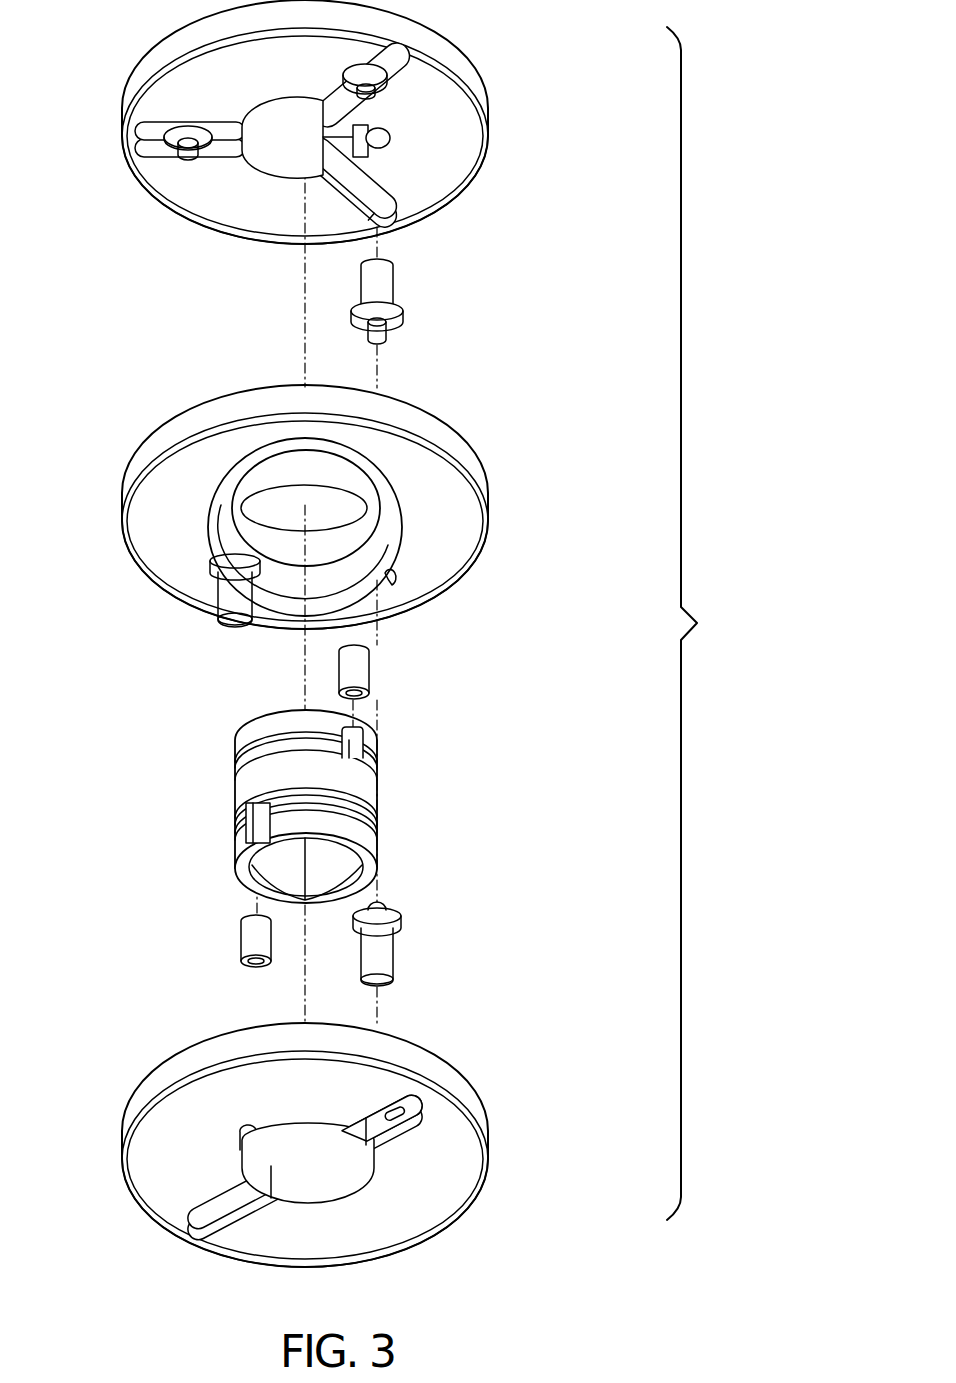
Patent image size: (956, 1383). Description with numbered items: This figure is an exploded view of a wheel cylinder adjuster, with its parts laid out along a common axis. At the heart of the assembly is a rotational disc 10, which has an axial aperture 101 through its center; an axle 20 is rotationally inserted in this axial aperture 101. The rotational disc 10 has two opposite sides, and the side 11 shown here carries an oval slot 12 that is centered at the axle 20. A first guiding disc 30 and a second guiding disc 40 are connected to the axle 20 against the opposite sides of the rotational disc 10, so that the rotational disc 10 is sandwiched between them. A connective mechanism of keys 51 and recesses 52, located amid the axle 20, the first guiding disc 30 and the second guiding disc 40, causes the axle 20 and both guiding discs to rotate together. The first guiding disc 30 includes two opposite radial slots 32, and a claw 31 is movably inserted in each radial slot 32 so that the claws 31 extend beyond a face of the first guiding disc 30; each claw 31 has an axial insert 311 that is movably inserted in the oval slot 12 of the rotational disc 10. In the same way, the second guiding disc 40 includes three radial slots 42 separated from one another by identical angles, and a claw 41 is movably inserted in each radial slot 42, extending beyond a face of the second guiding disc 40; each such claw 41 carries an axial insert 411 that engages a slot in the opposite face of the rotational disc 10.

The rotational disc 10 is at (214, 416).
The side 11 is at (158, 551).
The axial aperture 101 is at (358, 508).
The oval slot 12 is at (390, 578).
The axle 20 is at (258, 780).
The guiding disc 30 is at (178, 1073).
The claw 31 is at (390, 955).
The axial insert 311 is at (382, 907).
The radial slot 32 is at (390, 1127).
The guiding disc 40 is at (440, 52).
The claw 41 is at (383, 288).
The axial insert 411 is at (390, 336).
The radial slot 42 is at (393, 226).
The key 51 is at (360, 670).
The recess 52 is at (389, 142).